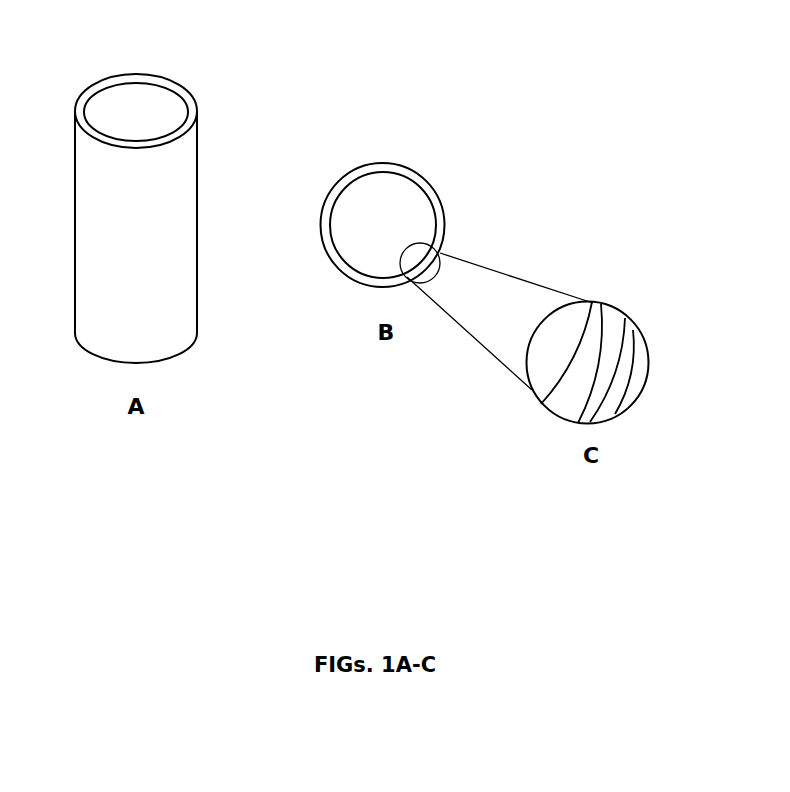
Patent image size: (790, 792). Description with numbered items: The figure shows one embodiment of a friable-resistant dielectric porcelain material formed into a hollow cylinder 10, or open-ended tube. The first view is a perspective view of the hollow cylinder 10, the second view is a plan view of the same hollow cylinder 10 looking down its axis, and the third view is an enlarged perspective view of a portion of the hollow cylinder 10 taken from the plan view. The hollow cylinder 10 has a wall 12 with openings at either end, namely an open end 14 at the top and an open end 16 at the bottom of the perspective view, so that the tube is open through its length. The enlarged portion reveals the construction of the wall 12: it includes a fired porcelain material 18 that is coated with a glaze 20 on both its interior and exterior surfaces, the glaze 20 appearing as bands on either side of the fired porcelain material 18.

In FIG. 1A, the hollow cylinder 10 is at (154, 213).
In FIG. 1B, the hollow cylinder 10 is at (418, 205).
In FIG. 1A, the wall 12 is at (90, 242).
In FIG. 1B, the wall 12 is at (443, 238).
In FIG. 1A, the open end 14 is at (130, 112).
In FIG. 1B, the open end 14 is at (387, 227).
In FIG. 1A, the open end 16 is at (168, 367).
In FIG. 1C, the fired porcelain material 18 is at (613, 317).
In FIG. 1C, the glaze 20 is at (615, 397).